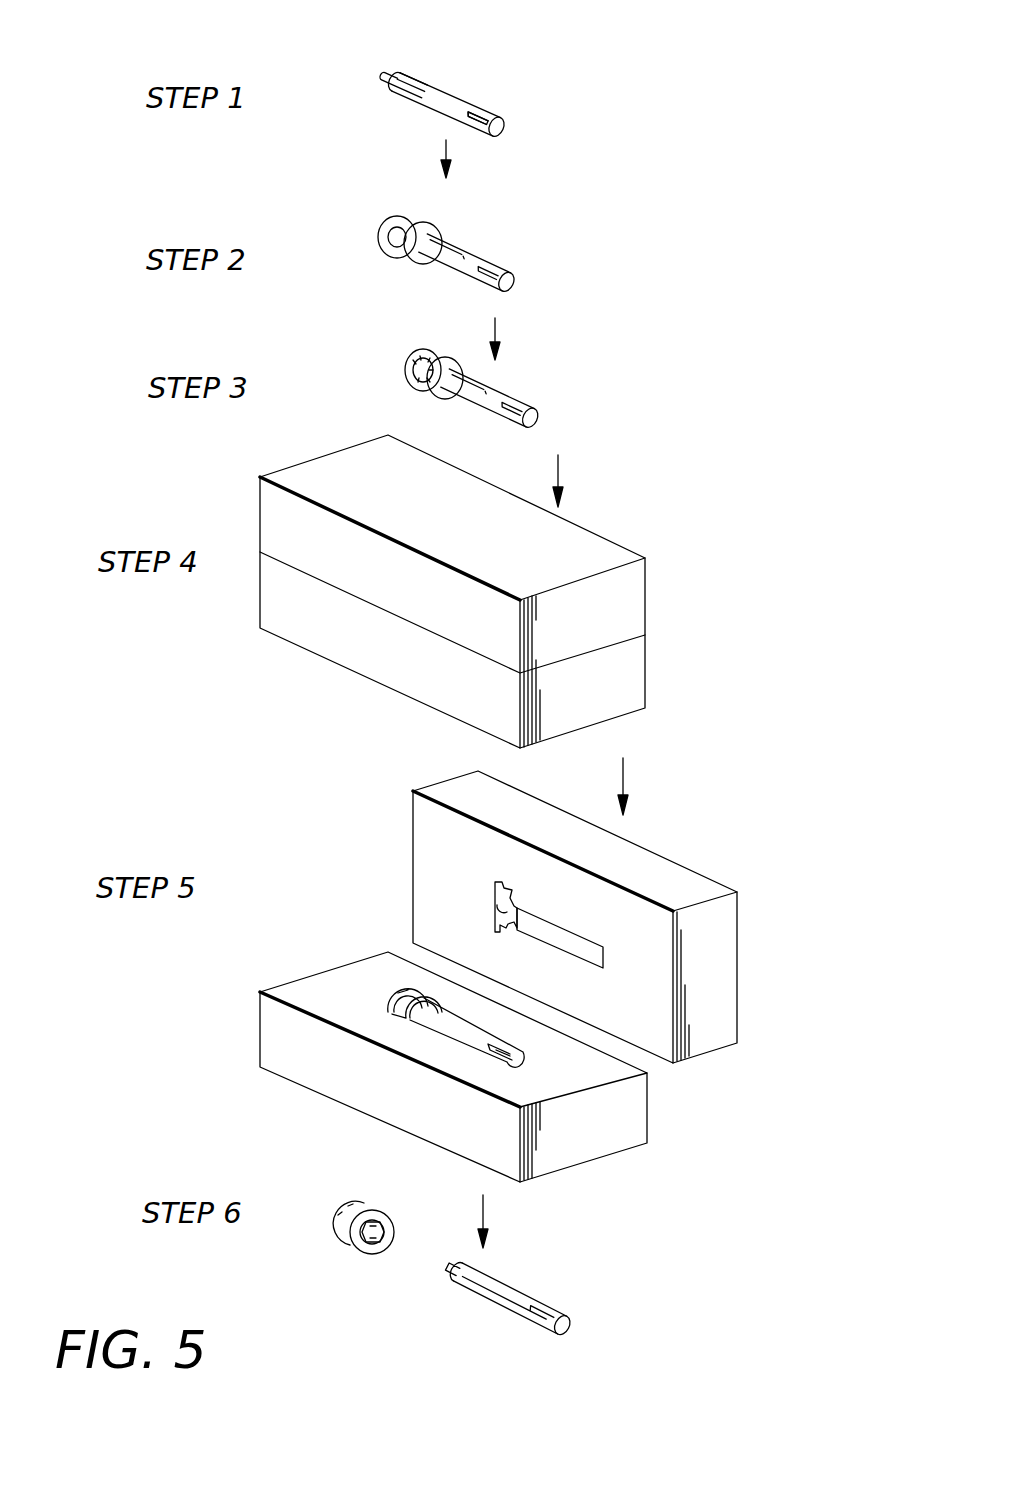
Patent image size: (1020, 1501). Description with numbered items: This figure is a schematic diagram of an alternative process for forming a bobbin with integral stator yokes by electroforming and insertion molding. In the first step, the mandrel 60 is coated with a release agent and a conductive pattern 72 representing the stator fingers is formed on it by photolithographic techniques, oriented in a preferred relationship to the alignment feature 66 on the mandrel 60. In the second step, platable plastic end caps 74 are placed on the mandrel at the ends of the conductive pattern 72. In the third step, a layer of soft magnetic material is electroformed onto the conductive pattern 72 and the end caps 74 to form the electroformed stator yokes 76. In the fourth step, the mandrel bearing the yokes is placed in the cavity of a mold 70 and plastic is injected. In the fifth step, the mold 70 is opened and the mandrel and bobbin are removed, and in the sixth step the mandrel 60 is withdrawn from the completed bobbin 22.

The bobbin 22 is at (392, 1005).
The mandrel 60 is at (455, 100).
The alignment feature 66 is at (505, 115).
The mold 70 is at (628, 685).
The conductive pattern 72 is at (415, 78).
The platable plastic end caps 74 is at (418, 266).
The electroformed stator yokes 76 is at (437, 400).